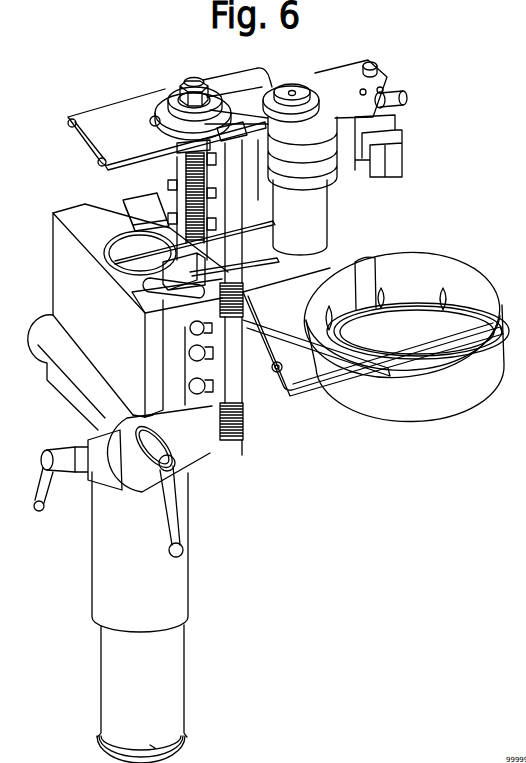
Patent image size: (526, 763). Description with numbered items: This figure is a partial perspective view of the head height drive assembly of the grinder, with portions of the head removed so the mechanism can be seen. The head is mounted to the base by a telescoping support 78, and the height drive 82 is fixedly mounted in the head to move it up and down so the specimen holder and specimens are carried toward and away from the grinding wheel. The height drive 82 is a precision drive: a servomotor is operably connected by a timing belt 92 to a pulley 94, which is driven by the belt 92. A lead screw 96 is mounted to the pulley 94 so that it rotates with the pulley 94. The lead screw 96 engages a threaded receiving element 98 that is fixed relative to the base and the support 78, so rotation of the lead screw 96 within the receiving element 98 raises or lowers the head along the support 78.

The telescoping support 78 is at (190, 584).
The height drive system 82 is at (383, 200).
The timing belt 92 is at (240, 72).
The pulley 94 is at (168, 88).
The lead screw 96 is at (182, 172).
The threaded receiving element 98 is at (117, 263).